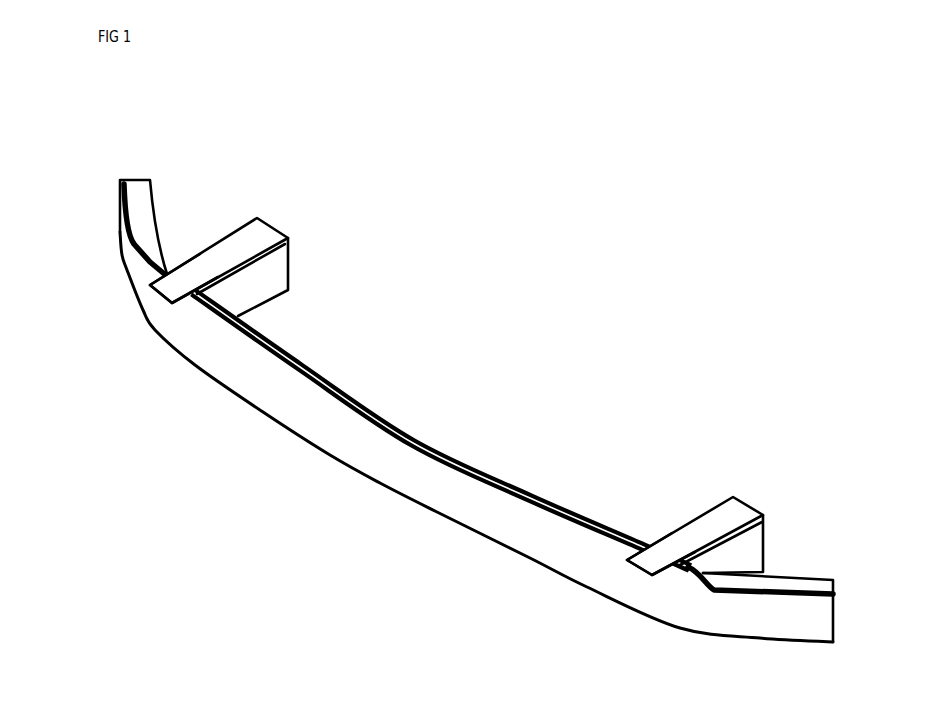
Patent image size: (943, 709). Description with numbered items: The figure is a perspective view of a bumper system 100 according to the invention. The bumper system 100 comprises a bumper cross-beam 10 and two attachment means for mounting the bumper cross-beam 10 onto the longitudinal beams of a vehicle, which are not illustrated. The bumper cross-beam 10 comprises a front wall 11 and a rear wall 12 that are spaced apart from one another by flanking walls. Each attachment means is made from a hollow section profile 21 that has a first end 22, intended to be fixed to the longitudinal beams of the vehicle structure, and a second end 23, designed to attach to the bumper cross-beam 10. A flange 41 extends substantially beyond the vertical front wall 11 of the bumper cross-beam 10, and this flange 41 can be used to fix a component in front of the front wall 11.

The bumper system 100 is at (497, 309).
The bumper cross-beam 10 is at (205, 358).
The front wall 11 is at (345, 437).
The rear wall 12 is at (462, 457).
The hollow section profile 21 is at (230, 253).
The first end 22 is at (305, 279).
The second end 23 is at (130, 274).
The flange 41 is at (643, 572).